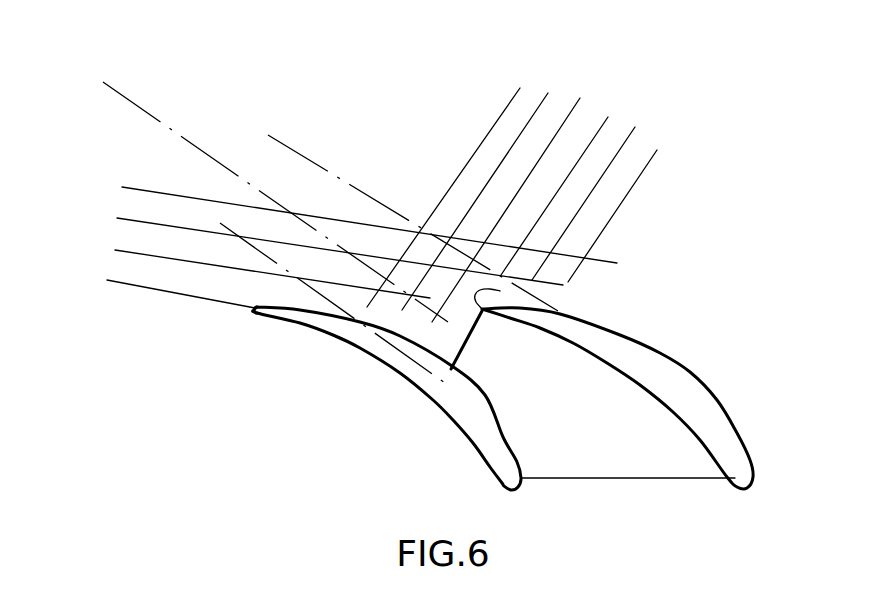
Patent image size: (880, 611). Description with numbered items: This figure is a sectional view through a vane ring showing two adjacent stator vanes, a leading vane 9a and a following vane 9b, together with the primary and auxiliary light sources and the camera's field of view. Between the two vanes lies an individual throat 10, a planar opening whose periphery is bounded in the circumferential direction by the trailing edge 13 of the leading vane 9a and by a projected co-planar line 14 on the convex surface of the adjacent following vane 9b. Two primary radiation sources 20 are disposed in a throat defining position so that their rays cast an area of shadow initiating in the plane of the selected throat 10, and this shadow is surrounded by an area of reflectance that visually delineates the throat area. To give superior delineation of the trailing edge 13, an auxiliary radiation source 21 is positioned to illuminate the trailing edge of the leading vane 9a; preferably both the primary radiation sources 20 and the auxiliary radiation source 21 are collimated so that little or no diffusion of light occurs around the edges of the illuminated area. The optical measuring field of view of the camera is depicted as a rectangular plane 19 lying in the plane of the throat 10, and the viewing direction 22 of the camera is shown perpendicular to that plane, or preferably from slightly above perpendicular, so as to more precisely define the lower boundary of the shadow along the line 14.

The leading vane 9a is at (680, 358).
The following vane 9b is at (478, 432).
The individual throat 10 is at (466, 333).
The trailing edge 13 is at (500, 291).
The projected co-planar line 14 is at (440, 364).
The rectangular plane 19 is at (445, 367).
The primary radiation sources 20 is at (584, 117).
The auxiliary radiation source 21 is at (141, 238).
The viewing direction 22 is at (201, 147).